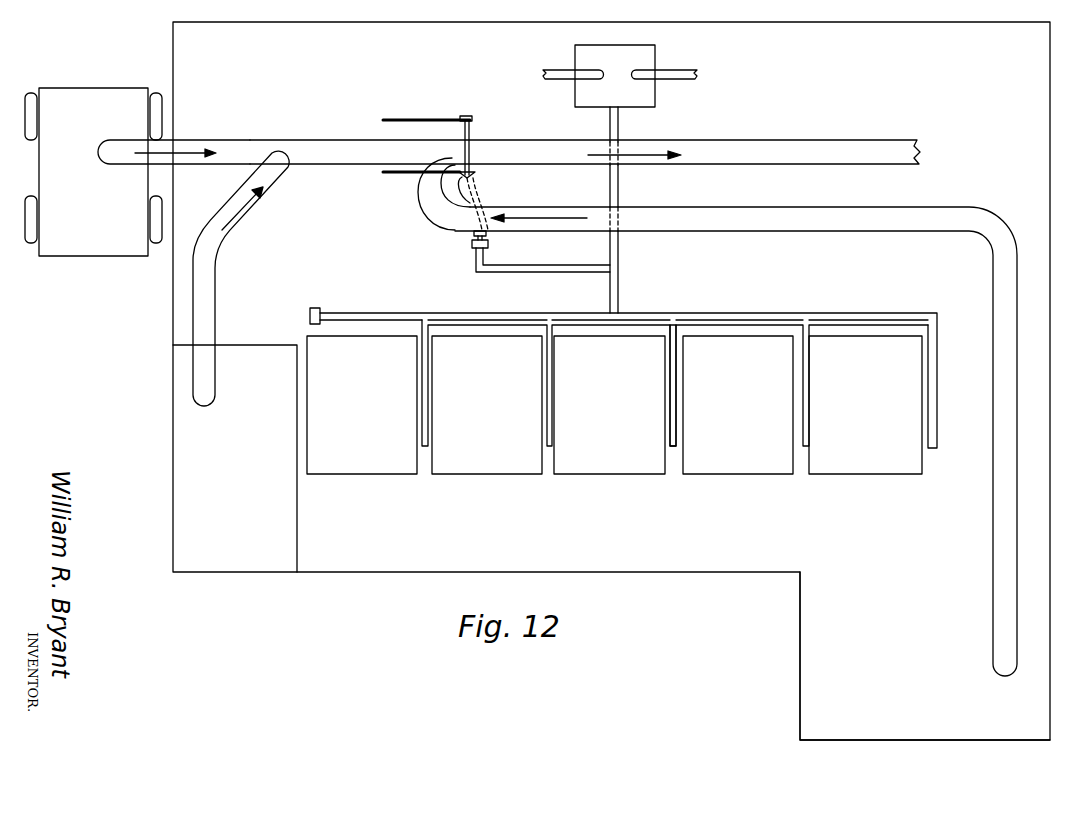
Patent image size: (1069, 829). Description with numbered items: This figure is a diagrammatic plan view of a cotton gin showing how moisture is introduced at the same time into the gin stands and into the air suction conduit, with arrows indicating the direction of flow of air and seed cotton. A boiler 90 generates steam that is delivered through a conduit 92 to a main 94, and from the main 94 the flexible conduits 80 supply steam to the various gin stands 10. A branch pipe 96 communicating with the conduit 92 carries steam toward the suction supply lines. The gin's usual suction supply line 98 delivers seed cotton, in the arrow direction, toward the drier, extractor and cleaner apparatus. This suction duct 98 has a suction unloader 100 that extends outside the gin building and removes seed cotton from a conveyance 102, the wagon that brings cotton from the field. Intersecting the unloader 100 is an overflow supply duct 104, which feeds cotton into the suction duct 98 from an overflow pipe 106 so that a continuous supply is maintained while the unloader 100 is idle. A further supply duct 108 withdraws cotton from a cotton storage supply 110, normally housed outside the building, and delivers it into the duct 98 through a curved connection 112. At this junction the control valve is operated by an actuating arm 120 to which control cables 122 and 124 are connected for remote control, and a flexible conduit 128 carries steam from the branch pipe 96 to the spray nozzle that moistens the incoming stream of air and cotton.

The gin stands 10 is at (473, 472).
The flexible conduits 80 is at (547, 367).
The boiler 90 is at (650, 98).
The conduit 92 is at (615, 185).
The main 94 is at (666, 313).
The branch pipe 96 is at (537, 257).
The suction supply line 98 is at (755, 145).
The suction unloader 100 is at (193, 147).
The conveyance 102 is at (104, 96).
The overflow supply duct 104 is at (212, 255).
The overflow pipe 106 is at (232, 560).
The supply duct 108 is at (927, 220).
The cotton storage supply 110 is at (805, 613).
The curved connection 112 is at (417, 183).
The actuating arm 120 is at (472, 137).
The control cable 122 is at (392, 175).
The control cable 124 is at (405, 119).
The flexible conduit 128 is at (463, 195).